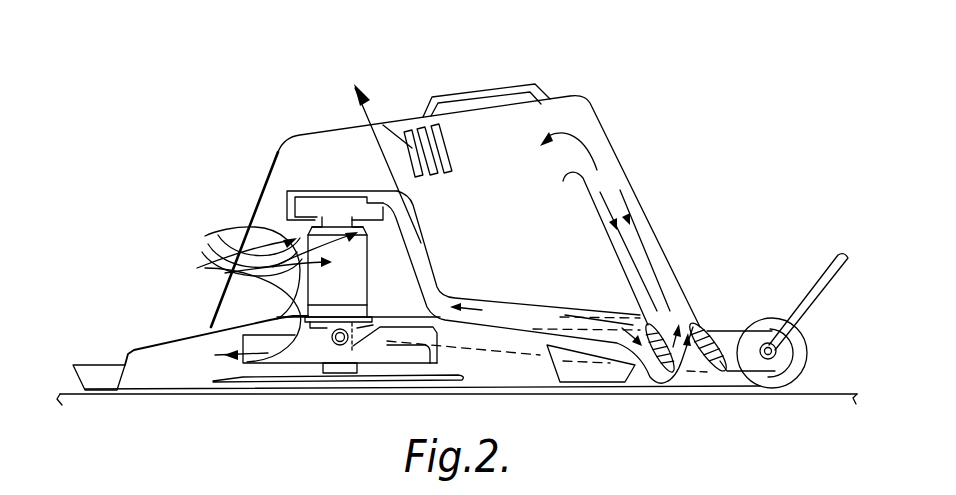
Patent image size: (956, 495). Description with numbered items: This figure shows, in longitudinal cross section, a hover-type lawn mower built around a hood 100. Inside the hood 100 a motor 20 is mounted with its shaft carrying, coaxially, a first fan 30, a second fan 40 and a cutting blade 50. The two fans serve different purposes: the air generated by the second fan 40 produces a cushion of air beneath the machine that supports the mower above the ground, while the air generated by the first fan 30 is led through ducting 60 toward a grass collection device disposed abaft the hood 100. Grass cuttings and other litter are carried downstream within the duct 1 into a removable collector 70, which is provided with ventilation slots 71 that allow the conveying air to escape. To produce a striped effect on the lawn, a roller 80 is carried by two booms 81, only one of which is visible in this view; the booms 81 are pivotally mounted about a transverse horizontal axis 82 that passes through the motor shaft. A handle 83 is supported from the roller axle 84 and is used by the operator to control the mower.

The hood 100 is at (323, 127).
The duct 1 is at (658, 273).
The motor 20 is at (205, 236).
The first fan 30 is at (304, 198).
The second fan 40 is at (257, 341).
The cutting blade 50 is at (315, 378).
The ducting 60 is at (537, 320).
The removable collector 70 is at (540, 268).
The ventilation slots 71 is at (447, 130).
The roller 80 is at (796, 372).
The boom 81 is at (748, 359).
The transverse horizontal axis 82 is at (345, 341).
The handle 83 is at (813, 284).
The roller axle 84 is at (778, 350).